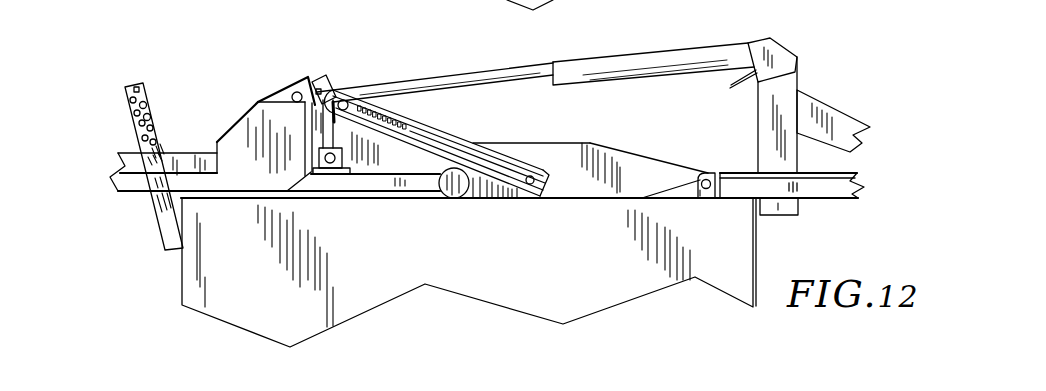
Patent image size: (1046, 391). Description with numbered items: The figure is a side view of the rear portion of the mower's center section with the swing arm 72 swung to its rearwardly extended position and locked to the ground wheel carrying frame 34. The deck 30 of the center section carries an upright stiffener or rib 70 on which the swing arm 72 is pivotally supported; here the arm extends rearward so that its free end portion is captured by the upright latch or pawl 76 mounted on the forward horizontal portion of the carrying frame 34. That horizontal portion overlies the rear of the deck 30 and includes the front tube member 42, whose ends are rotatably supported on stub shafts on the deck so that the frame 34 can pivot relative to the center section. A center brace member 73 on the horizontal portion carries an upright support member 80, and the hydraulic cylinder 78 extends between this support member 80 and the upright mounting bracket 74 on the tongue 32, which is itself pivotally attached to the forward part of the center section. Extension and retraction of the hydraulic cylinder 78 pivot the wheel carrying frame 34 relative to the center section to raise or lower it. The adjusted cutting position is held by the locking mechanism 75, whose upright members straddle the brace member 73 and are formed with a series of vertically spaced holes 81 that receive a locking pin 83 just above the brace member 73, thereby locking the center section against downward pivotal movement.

The upper deck 30 is at (263, 283).
The tongue 32 is at (853, 177).
The ground wheel carrying frame 34 is at (187, 165).
The front tube member 42 is at (453, 177).
The upright stiffener or rib 70 is at (593, 178).
The swing arm 72 is at (400, 113).
The center brace member 73 is at (378, 157).
The upright mounting bracket 74 is at (773, 53).
The locking mechanism 75 is at (235, 62).
The upright latch or pawl 76 is at (334, 98).
The hydraulic cylinder 78 is at (485, 77).
The upright support member 80 is at (282, 90).
The holes 81 is at (142, 84).
The locking pin 83 is at (135, 121).